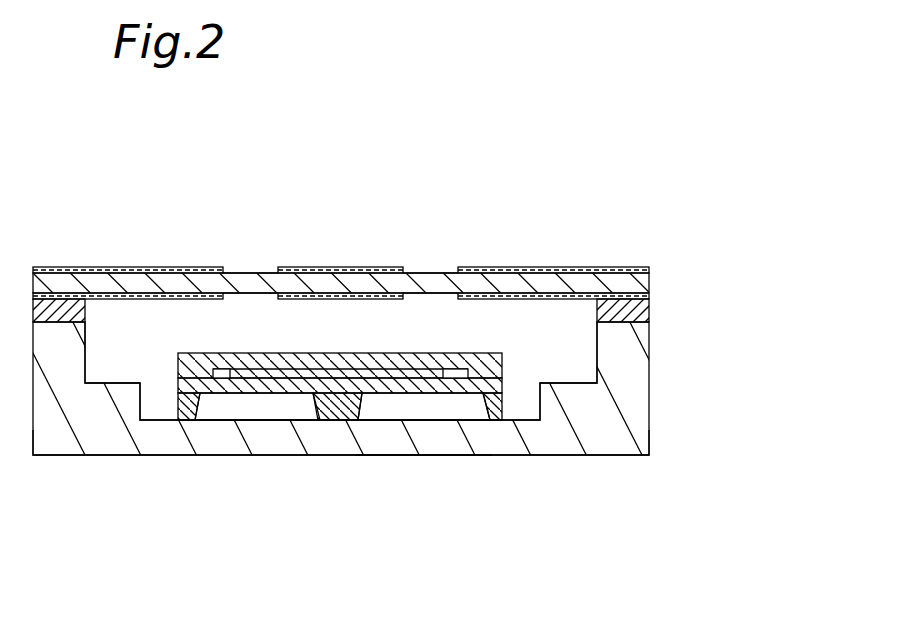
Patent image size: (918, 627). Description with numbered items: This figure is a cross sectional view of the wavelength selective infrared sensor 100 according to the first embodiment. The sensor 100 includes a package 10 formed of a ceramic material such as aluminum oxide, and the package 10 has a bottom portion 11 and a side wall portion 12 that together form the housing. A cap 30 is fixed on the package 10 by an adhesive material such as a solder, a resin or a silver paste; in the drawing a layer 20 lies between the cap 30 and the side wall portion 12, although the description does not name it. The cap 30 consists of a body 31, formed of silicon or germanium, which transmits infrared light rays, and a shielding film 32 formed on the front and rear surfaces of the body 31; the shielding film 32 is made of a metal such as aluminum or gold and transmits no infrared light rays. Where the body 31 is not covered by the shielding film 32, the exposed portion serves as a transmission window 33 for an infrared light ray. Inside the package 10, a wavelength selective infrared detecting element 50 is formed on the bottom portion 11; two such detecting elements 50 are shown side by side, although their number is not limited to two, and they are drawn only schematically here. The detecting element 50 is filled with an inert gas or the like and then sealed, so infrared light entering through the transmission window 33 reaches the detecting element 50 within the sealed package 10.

The wavelength selective infrared sensor 100 is at (408, 198).
The package 10 is at (747, 373).
The bottom portion 11 is at (636, 441).
The side wall portion 12 is at (643, 370).
The seal ring 20 is at (647, 310).
The cap 30 is at (688, 180).
The body 31 is at (637, 283).
The shielding film 32 is at (594, 299).
The transmission window 33 is at (430, 268).
The wavelength selective infrared detecting element 50 is at (492, 461).